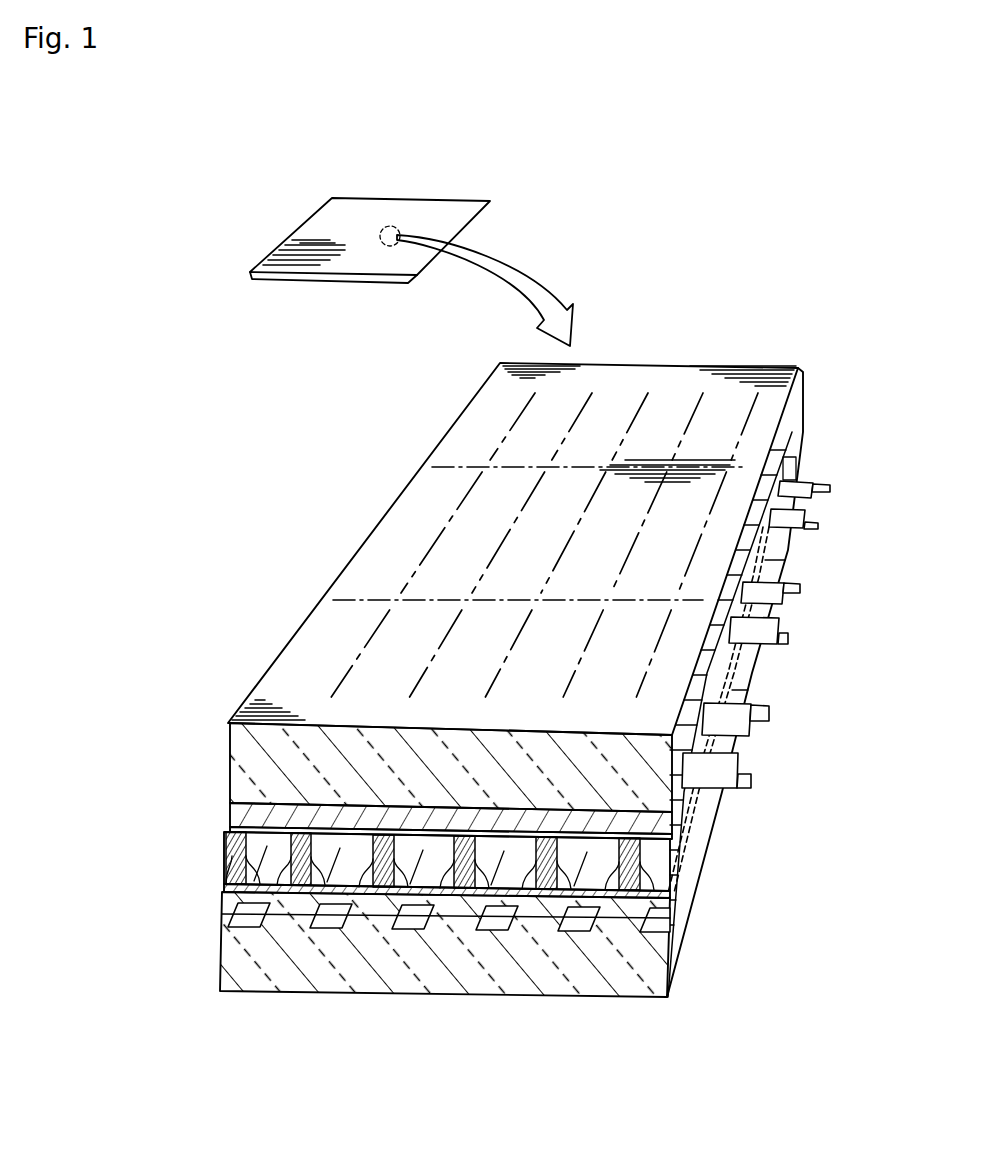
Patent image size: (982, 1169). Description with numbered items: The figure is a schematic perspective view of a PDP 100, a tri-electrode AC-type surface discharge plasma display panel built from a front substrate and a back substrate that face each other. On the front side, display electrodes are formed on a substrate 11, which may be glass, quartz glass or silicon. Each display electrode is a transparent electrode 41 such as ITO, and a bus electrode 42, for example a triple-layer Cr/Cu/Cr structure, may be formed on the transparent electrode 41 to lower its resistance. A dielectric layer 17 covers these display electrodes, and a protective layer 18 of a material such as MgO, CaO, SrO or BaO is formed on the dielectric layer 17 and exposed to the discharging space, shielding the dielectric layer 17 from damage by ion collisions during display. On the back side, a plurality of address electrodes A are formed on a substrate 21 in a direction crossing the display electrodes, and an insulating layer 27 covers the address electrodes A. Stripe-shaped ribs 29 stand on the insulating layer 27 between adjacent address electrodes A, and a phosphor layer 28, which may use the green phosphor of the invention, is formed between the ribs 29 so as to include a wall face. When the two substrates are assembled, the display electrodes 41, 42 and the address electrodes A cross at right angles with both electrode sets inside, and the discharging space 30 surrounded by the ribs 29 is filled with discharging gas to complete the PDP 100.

The PDP 100 is at (370, 171).
The substrate 11 is at (483, 209).
The dielectric layer 17 is at (230, 810).
The protective layer 18 is at (230, 830).
The substrate 21 is at (362, 285).
The insulating layer 27 is at (230, 888).
The phosphor layer 28 is at (325, 897).
The ribs 29 is at (262, 928).
The discharging space 30 is at (662, 862).
The transparent electrode 41 is at (728, 790).
The bus electrode 42 is at (750, 783).
The address electrodes A is at (320, 930).